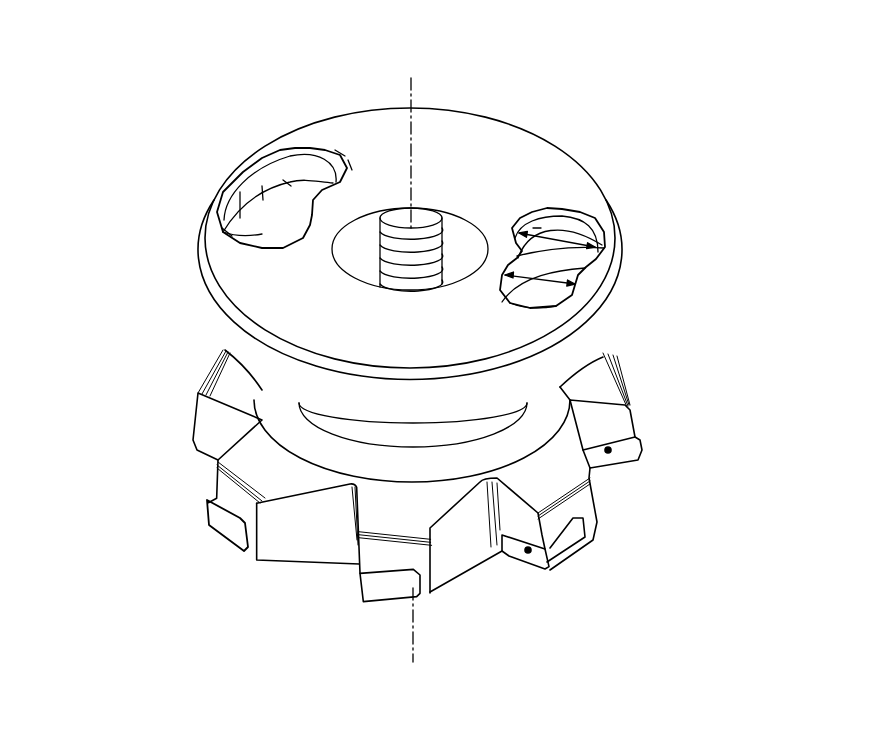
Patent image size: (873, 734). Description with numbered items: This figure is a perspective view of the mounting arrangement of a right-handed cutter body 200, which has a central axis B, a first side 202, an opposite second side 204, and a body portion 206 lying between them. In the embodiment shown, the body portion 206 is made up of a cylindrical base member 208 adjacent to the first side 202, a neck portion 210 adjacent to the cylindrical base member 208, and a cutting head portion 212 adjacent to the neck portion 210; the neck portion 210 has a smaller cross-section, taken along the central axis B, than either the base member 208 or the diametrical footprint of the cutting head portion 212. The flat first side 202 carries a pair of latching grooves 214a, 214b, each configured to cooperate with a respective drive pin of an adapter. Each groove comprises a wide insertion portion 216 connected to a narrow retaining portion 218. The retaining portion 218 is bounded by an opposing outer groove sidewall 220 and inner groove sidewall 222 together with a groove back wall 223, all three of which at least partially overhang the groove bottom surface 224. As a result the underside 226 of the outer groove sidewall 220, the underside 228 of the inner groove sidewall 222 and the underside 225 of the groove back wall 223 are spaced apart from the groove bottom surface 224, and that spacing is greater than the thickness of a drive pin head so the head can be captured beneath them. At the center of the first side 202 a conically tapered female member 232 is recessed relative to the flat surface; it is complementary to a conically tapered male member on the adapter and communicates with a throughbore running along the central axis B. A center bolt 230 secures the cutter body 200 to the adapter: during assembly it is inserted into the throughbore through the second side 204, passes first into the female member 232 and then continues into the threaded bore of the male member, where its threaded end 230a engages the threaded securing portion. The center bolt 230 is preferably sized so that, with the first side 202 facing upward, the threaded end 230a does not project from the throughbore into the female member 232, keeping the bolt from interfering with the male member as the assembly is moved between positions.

The cutter body 200 is at (808, 167).
The first side 202 is at (479, 135).
The second side 204 is at (298, 566).
The body portion 206 is at (87, 300).
The cylindrical base member 208 is at (213, 311).
The neck portion 210 is at (350, 430).
The cutting head portion 212 is at (208, 492).
The latching groove 214a is at (230, 145).
The latching groove 214b is at (577, 252).
The wide insertion portion 216 is at (612, 230).
The narrow retaining portion 218 is at (540, 306).
The outer groove sidewall 220 is at (232, 192).
The inner groove sidewall 222 is at (354, 166).
The groove back wall 223 is at (340, 153).
The groove bottom surface 224 is at (226, 232).
The underside of groove back wall 225 is at (285, 180).
The underside of outer groove sidewall 226 is at (266, 186).
The underside of inner groove sidewall 228 is at (500, 310).
The center bolt 230 is at (360, 217).
The threaded end 230a is at (398, 228).
The conically tapered female member 232 is at (463, 243).